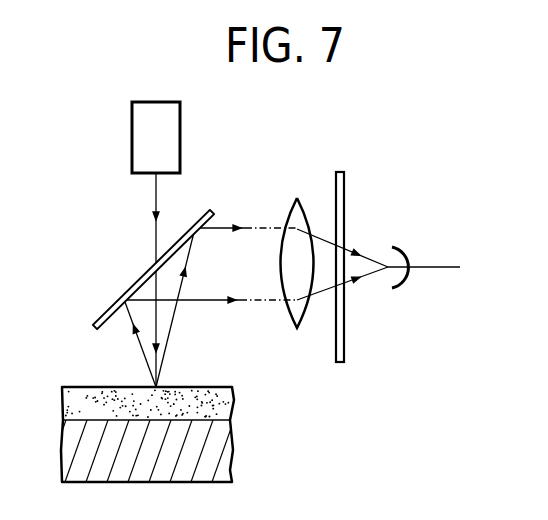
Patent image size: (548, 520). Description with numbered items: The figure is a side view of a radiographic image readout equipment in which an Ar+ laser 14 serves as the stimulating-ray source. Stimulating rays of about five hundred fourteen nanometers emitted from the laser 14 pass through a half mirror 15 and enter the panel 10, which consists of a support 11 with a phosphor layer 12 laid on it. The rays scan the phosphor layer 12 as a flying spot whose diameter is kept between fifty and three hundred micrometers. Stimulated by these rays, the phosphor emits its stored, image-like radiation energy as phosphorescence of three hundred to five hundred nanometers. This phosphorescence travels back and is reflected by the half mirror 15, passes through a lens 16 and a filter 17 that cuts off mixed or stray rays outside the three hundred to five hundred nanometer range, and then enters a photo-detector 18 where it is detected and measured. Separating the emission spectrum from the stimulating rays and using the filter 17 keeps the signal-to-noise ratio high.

The panel 10 is at (167, 390).
The support 11 is at (222, 456).
The phosphor layer 12 is at (222, 406).
The Ar+ laser 14 is at (132, 131).
The half mirror 15 is at (115, 302).
The lens 16 is at (291, 213).
The filter 17 is at (345, 178).
The photodetector 18 is at (404, 283).